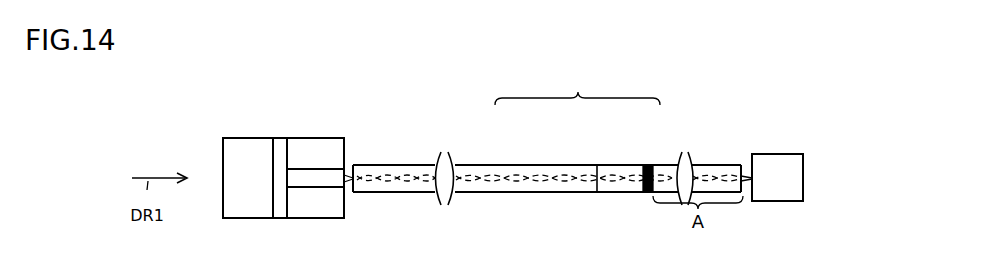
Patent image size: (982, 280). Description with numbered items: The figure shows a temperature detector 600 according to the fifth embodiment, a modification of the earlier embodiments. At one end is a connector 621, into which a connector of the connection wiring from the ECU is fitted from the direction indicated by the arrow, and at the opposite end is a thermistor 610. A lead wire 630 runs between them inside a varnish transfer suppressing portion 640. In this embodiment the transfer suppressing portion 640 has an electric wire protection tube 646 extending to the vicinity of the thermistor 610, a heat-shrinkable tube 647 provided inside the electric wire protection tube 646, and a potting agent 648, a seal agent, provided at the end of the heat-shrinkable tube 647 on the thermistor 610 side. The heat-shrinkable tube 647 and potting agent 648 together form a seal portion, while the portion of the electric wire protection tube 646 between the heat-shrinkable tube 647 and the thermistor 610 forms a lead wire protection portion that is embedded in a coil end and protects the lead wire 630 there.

The temperature detector 600 is at (718, 129).
The thermistor 610 is at (776, 190).
The connector 621 is at (250, 153).
The lead wire 630 is at (416, 172).
The varnish transfer suppressing portion 640 is at (577, 86).
The electric wire protection tube 646 is at (518, 165).
The heat-shrinkable tube 647 is at (596, 168).
The potting agent 648 is at (648, 165).